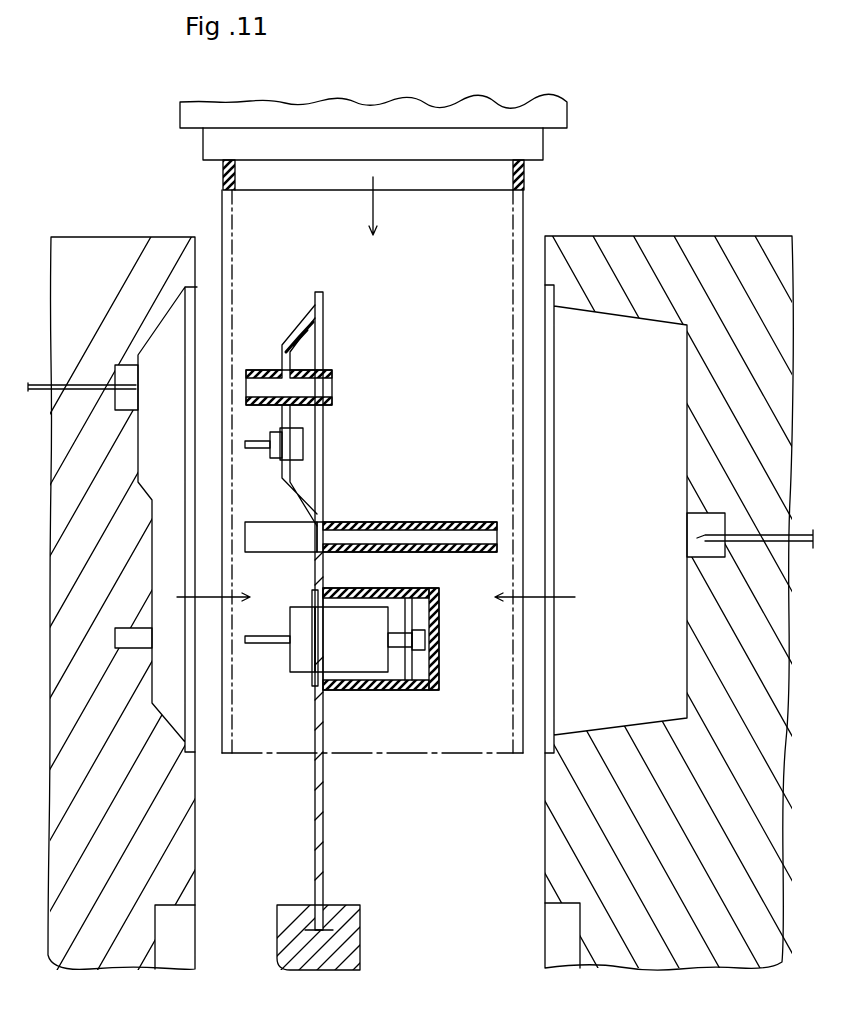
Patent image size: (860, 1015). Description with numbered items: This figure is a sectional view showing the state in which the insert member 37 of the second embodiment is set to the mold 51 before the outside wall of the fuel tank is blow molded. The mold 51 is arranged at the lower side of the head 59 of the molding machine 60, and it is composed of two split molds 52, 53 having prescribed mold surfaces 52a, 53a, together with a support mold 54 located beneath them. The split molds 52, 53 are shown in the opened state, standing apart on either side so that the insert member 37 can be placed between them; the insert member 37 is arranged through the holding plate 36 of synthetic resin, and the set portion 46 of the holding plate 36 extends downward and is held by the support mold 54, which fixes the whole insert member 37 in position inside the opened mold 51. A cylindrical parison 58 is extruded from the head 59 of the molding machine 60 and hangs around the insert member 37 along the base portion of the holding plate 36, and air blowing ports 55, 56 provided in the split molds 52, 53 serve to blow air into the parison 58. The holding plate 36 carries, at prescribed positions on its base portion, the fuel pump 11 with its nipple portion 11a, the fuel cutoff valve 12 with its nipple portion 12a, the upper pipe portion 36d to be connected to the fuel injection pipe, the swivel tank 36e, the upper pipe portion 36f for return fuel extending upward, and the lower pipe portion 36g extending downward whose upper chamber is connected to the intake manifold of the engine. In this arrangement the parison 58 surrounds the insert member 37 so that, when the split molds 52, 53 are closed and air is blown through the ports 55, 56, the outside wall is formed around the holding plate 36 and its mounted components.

The molding machine 60 is at (552, 112).
The head 59 is at (535, 143).
The parison 58 is at (524, 173).
The mold 51 is at (682, 167).
The split mold 52 is at (128, 256).
The mold surface 52a is at (140, 458).
The air blowing port 55 is at (125, 392).
The split mold 53 is at (665, 252).
The mold surface 53a is at (687, 450).
The air blowing port 56 is at (808, 548).
The support mold 54 is at (355, 938).
The insert member 37 is at (300, 779).
The set portion 46 is at (322, 822).
The upper pipe portion 36d is at (272, 372).
The holding plate 36 is at (305, 503).
The fuel cutoff valve 12 is at (298, 446).
The nipple portion 12a is at (250, 448).
The upper pipe portion 36f is at (272, 546).
The lower pipe portion 36g is at (422, 524).
The swivel tank 36e is at (432, 624).
The fuel pump 11 is at (350, 663).
The nipple portion 11a is at (258, 644).